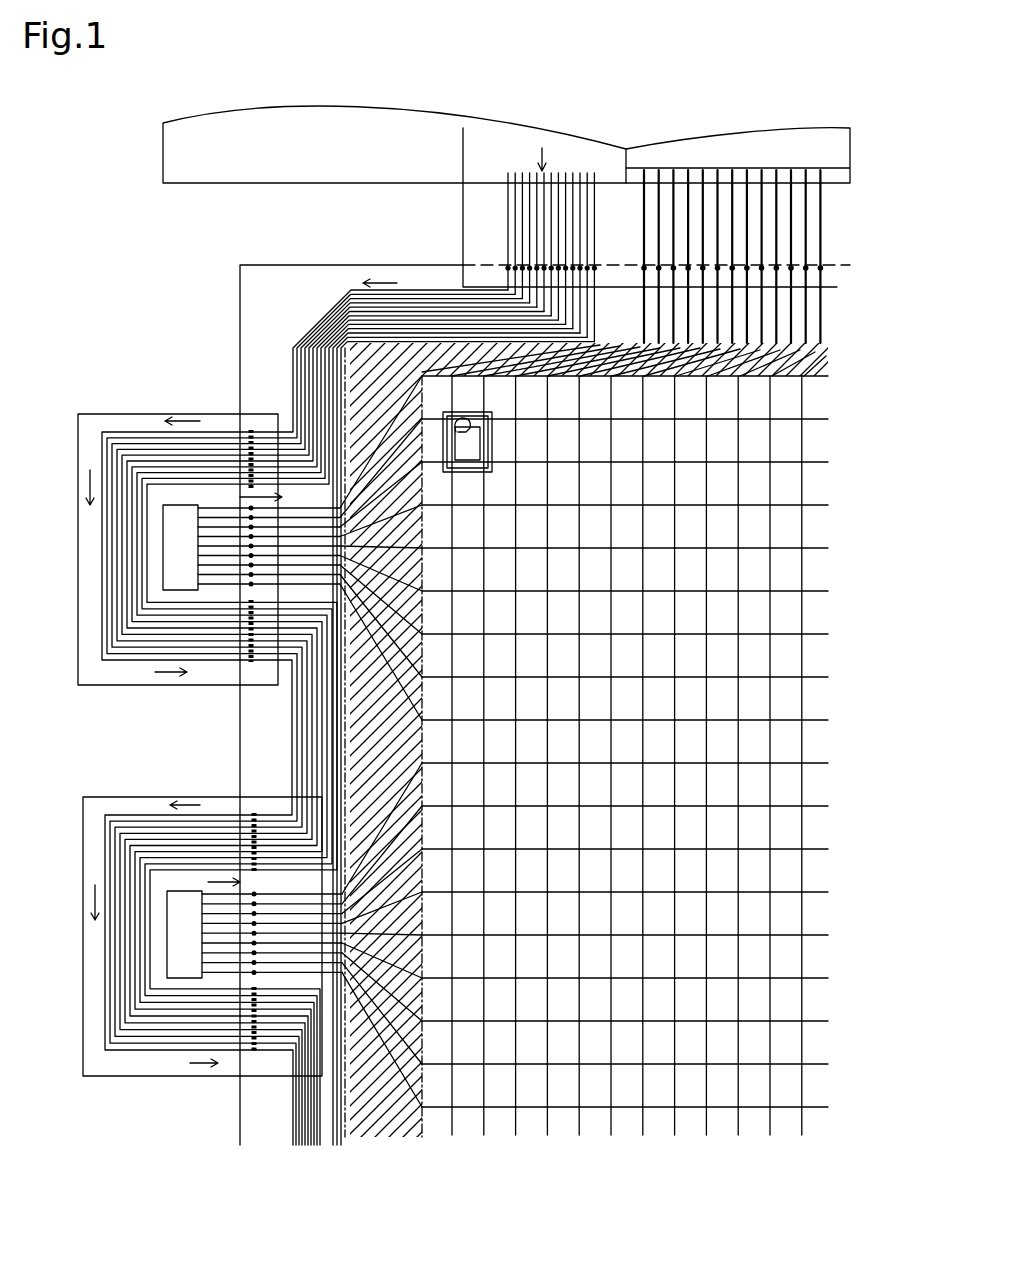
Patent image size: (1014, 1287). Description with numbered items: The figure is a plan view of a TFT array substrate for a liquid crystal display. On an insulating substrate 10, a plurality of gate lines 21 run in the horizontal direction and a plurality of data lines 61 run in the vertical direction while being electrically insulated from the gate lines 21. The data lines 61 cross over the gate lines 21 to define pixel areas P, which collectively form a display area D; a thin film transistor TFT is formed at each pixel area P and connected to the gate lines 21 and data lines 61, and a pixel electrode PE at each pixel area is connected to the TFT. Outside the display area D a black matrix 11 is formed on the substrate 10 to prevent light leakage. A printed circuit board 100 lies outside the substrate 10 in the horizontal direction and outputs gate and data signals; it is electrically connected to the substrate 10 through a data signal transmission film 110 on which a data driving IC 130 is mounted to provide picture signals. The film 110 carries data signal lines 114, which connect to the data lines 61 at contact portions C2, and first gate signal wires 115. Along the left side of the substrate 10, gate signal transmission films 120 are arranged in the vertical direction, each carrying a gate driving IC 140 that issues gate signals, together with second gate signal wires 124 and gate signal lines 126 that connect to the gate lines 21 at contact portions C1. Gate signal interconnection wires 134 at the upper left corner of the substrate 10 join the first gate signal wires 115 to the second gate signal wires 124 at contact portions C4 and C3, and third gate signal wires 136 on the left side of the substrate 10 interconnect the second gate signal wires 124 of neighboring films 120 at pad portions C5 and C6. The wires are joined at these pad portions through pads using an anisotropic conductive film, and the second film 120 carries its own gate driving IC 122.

The printed circuit board 100 is at (185, 186).
The data driving IC 130 is at (625, 148).
The data signal lines 114 is at (820, 190).
The first gate signal wires 115 is at (506, 203).
The data signal transmission film 110 is at (463, 232).
The contact portion C4 is at (596, 265).
The contact portion C2 is at (822, 265).
The insulating substrate 10 is at (240, 310).
The gate signal interconnection wires 134 is at (305, 346).
The contact portion C3 is at (247, 432).
The gate signal transmission film 120 is at (78, 560).
The second gate signal wires 124 is at (165, 430).
The gate signal lines 126 is at (215, 592).
The gate driving IC 140 is at (163, 548).
The contact portion C1 is at (250, 503).
The contact portion C5 is at (250, 665).
The third gate signal wires 136 is at (295, 775).
The contact portion C6 is at (253, 815).
The gate driver IC 122 is at (167, 930).
The black matrix 11 is at (422, 1158).
The gate lines 21 is at (440, 505).
The display area D is at (478, 1112).
The pixel area P is at (458, 452).
The data lines 61 is at (488, 488).
The pixel electrode PE is at (482, 443).
The thin film transistor TFT is at (472, 420).